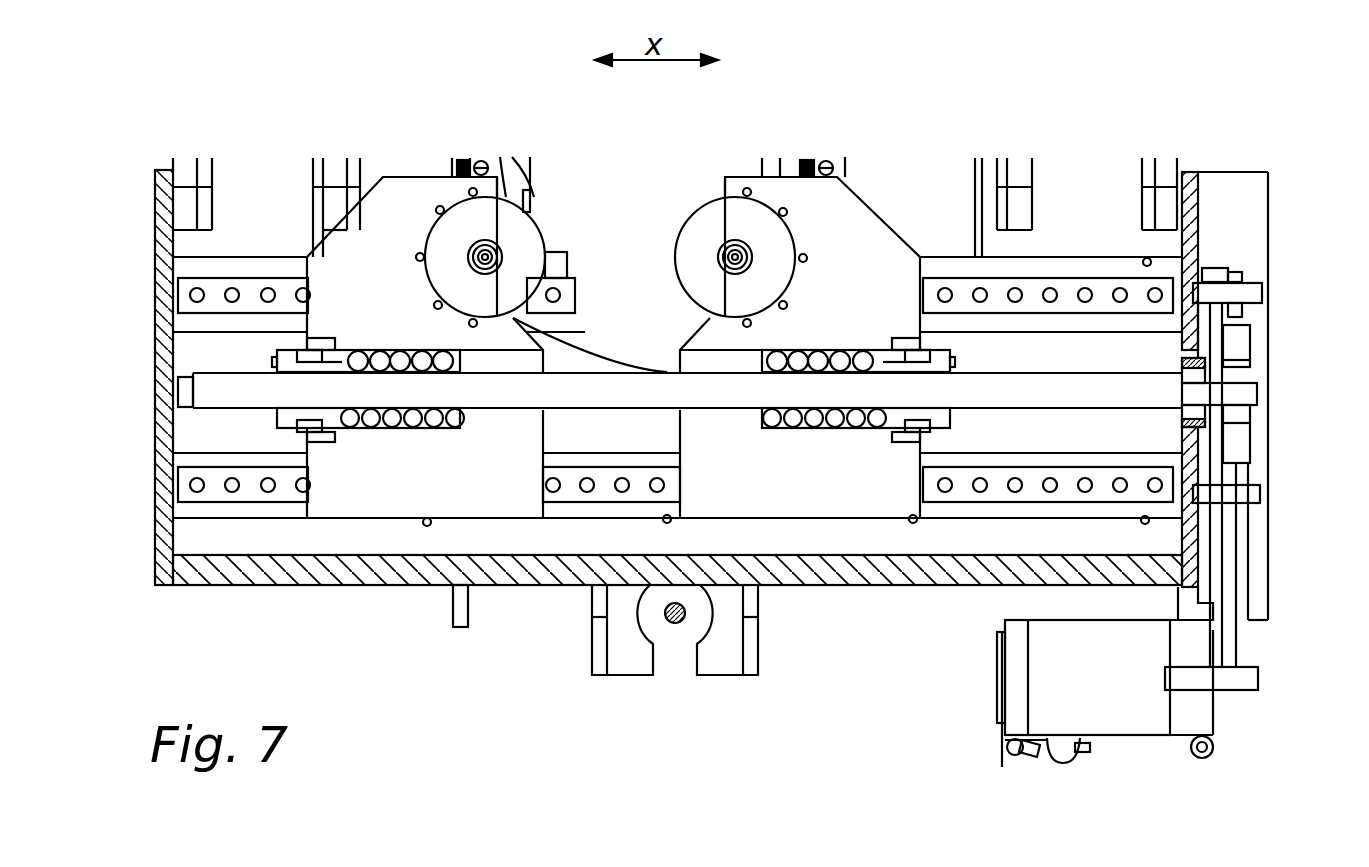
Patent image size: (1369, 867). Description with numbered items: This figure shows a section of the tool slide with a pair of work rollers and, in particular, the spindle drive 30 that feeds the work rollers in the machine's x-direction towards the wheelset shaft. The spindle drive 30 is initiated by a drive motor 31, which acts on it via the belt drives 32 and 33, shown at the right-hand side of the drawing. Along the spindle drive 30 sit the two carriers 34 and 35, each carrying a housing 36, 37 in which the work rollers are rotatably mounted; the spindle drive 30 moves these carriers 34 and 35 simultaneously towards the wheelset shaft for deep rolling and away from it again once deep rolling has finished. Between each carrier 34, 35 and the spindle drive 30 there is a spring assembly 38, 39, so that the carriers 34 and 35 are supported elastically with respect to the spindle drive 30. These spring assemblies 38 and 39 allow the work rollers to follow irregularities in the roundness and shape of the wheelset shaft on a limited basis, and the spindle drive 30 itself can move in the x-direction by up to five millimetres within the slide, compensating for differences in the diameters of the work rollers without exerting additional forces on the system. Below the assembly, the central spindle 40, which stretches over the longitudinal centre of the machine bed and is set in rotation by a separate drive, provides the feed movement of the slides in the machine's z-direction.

The spindle drive 30 is at (1025, 385).
The drive motor 31 is at (1118, 722).
The belt drive 32 is at (1237, 552).
The belt drive 33 is at (1242, 340).
The carrier 34 is at (843, 220).
The carrier 35 is at (389, 200).
The housing 36 is at (757, 220).
The housing 37 is at (467, 218).
The spring assembly 38 is at (850, 432).
The spring assembly 39 is at (388, 420).
The central spindle 40 is at (675, 622).